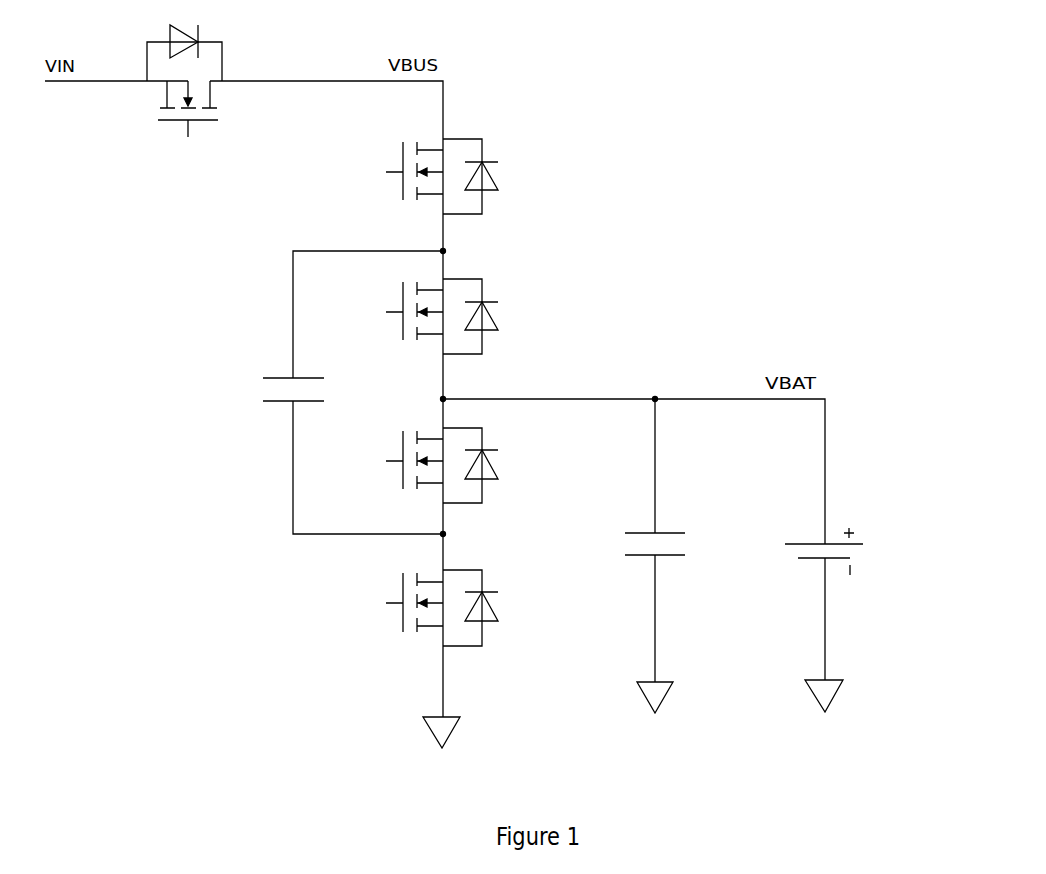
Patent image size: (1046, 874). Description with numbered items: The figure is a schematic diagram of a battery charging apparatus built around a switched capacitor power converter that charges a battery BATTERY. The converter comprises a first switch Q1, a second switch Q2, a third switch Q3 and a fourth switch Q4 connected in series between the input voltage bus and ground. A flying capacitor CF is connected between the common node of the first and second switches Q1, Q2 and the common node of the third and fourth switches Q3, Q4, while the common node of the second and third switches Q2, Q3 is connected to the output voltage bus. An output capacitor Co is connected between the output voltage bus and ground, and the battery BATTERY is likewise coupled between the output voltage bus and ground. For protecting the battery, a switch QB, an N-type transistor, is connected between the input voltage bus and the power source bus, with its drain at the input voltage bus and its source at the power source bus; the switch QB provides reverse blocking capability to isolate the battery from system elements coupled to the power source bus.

The switch QB is at (206, 109).
The first switch Q1 is at (442, 187).
The second switch Q2 is at (442, 331).
The third switch Q3 is at (442, 473).
The fourth switch Q4 is at (442, 619).
The flying capacitor CF is at (331, 392).
The output capacitor Co is at (678, 556).
The battery BATTERY is at (872, 620).